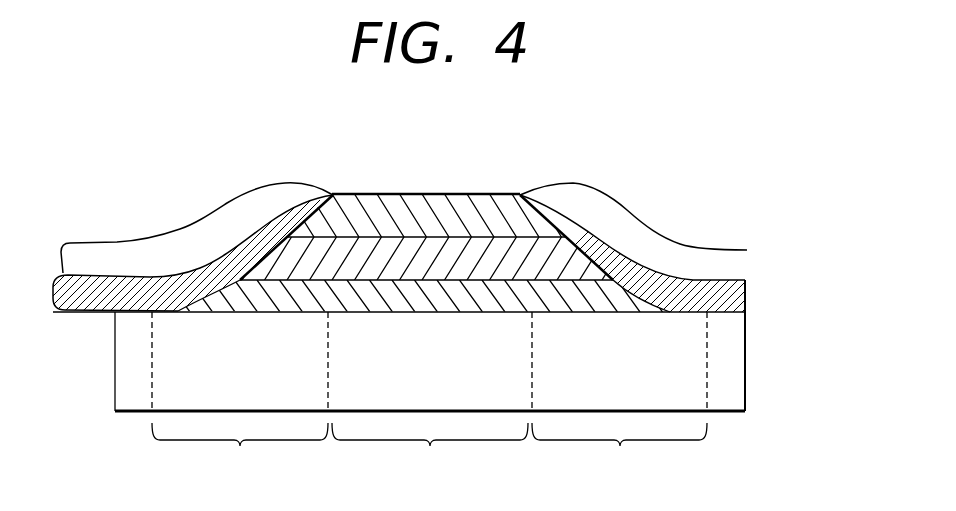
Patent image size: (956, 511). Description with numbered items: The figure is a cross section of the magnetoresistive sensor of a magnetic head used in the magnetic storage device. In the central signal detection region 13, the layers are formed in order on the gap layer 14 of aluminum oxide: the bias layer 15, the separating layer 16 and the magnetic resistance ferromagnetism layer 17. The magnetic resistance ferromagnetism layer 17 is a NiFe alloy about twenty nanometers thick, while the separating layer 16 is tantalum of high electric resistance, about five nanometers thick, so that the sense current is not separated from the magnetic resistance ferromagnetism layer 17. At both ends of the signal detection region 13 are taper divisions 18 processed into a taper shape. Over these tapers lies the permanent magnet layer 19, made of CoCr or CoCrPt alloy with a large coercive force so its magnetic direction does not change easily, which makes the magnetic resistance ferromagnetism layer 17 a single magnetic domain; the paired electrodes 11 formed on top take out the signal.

The paired electrodes 11 is at (228, 211).
The signal detection region 13 is at (430, 452).
The gap layer 14 is at (735, 360).
The bias layer 15 is at (518, 295).
The separating layer 16 is at (400, 255).
The magnetic resistance ferromagnetism layer 17 is at (350, 200).
The taper division 18 is at (429, 397).
The permanent magnet layer 19 is at (160, 285).